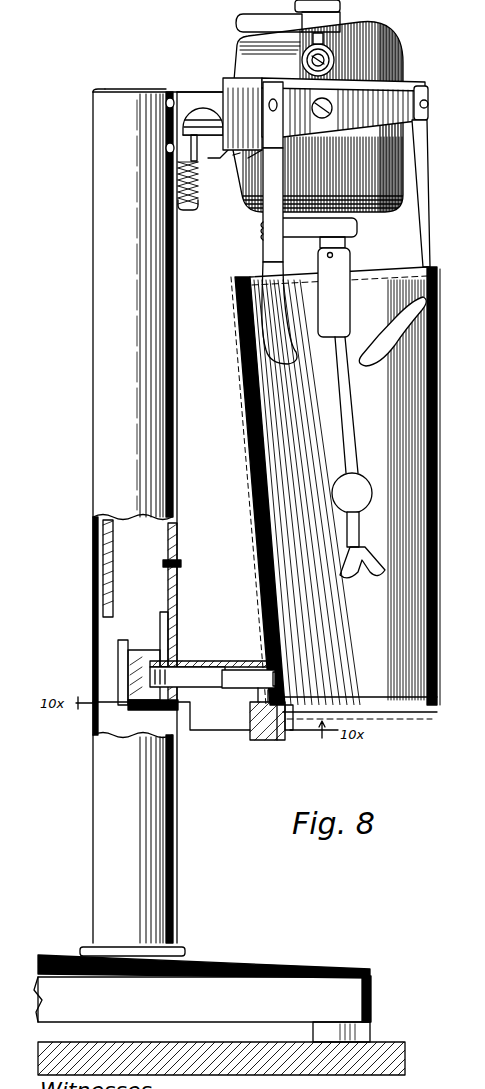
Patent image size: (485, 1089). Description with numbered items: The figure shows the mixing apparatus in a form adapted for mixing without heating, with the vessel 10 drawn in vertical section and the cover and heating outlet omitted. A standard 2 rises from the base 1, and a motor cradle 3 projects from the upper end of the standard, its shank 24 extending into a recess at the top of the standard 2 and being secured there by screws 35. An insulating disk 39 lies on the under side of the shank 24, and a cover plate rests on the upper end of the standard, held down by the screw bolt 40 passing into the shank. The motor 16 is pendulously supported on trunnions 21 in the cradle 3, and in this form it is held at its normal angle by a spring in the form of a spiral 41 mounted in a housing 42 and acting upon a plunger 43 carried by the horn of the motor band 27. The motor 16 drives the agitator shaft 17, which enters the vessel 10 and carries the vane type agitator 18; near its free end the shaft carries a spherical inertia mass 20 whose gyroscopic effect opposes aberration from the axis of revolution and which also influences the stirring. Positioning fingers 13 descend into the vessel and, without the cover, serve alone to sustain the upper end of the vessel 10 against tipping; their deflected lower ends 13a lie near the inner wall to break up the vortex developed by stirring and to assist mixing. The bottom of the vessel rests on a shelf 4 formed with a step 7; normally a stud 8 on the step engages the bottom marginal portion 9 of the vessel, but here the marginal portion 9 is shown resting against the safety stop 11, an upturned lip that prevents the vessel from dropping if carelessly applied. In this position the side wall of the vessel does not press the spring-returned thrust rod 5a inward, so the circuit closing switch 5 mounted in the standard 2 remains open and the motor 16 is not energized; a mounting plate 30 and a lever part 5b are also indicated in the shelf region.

The base 1 is at (270, 975).
The standard 2 is at (176, 558).
The motor cradle 3 is at (296, 123).
The shelf 4 is at (200, 670).
The circuit closing switch 5 is at (140, 640).
The thrust rod 5a is at (230, 670).
The lever arm 5b is at (218, 660).
The step 7 is at (262, 742).
The stud 8 is at (258, 710).
The bottom marginal portion 9 is at (283, 742).
The vessel 10 is at (438, 447).
The safety stop 11 is at (291, 733).
The positioning fingers 13 is at (263, 251).
The deflected lower ends 13a is at (264, 344).
The motor 16 is at (386, 22).
The agitator shaft 17 is at (348, 412).
The agitator 18 is at (366, 541).
The inertia mass 20 is at (360, 487).
The trunnions 21 is at (322, 119).
The shank 24 is at (194, 125).
The motor band 27 is at (262, 96).
The plate 30 is at (113, 558).
The screws 35 is at (170, 98).
The insulating disk 39 is at (112, 79).
The screw bolt 40 is at (137, 91).
The spiral spring 41 is at (198, 180).
The housing 42 is at (198, 201).
The plunger 43 is at (197, 145).